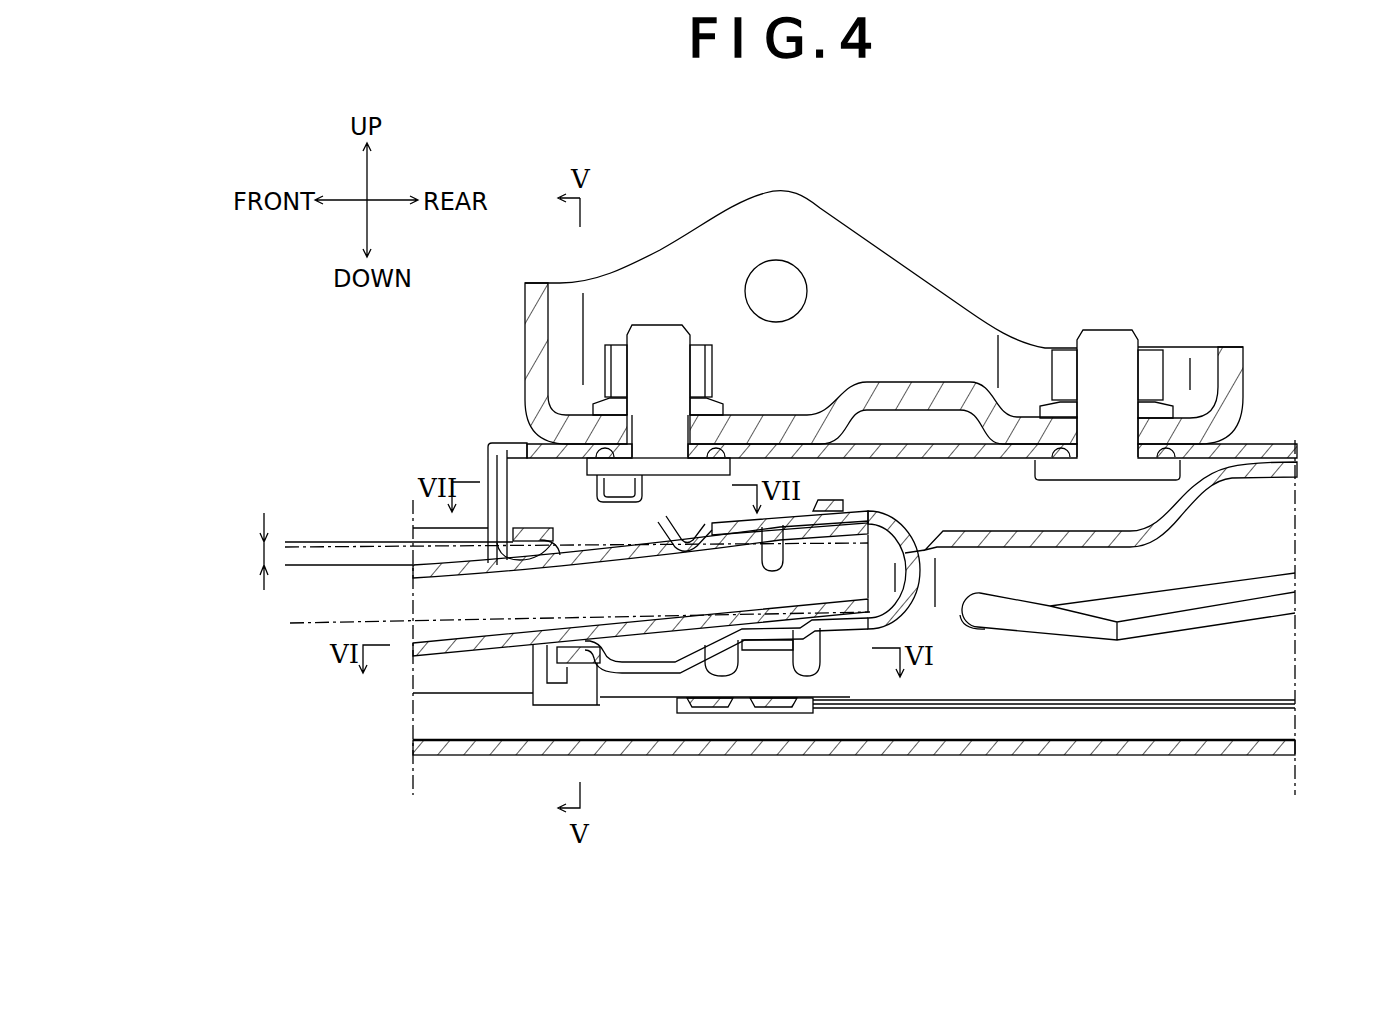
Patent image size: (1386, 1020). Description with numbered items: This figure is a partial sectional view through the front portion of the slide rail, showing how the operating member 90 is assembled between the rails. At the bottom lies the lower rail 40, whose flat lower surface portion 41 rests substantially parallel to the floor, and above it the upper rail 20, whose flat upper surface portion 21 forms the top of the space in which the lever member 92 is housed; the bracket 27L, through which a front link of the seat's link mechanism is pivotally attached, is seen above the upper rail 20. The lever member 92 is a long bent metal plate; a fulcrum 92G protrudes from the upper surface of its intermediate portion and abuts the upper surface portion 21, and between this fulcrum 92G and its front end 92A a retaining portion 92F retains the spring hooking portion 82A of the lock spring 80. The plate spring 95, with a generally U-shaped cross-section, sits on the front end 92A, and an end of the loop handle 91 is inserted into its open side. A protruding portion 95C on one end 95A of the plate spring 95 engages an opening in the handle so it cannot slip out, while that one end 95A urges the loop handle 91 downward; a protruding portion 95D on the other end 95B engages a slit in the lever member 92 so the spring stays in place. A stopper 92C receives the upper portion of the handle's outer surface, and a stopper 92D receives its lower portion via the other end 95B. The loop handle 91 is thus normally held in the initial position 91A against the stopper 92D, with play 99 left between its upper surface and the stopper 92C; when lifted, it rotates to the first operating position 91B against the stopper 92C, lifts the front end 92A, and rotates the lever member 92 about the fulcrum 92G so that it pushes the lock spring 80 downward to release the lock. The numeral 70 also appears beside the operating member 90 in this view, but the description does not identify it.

The bracket 27L is at (878, 295).
The upper surface portion 21 is at (933, 443).
The upper rail 20 is at (883, 345).
The lever member 92 is at (884, 586).
The front end 92A is at (522, 553).
The stopper 92C is at (500, 553).
The stopper 92D is at (545, 640).
The retaining portion 92F is at (960, 625).
The fulcrum 92G is at (1243, 447).
The loop handle 91 is at (572, 677).
The initial position 91A is at (466, 648).
The first operating position 91B is at (303, 617).
The play 99 is at (245, 551).
The plate spring 95 is at (789, 601).
The operating member 90 is at (789, 601).
The connecting structure 70 is at (789, 601).
The one end 95A is at (717, 527).
The other end 95B is at (592, 660).
The protruding portion 95C is at (769, 560).
The protruding portion 95D is at (720, 665).
The lock spring 80 is at (1054, 693).
The spring hooking portion 82A is at (972, 610).
The lower surface portion 41 is at (1153, 753).
The lower rail 40 is at (854, 792).